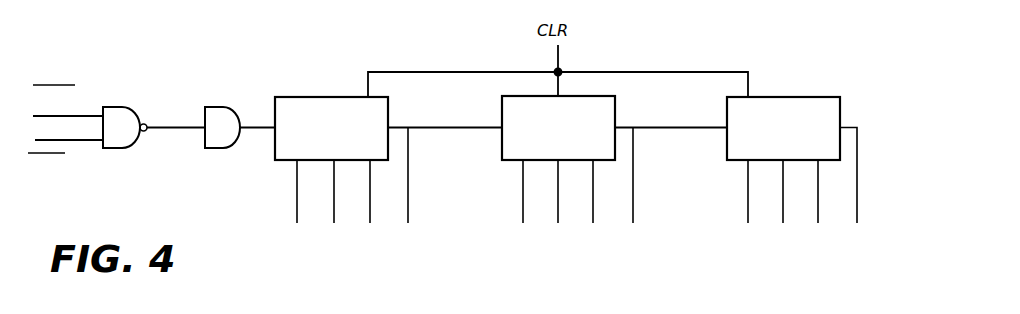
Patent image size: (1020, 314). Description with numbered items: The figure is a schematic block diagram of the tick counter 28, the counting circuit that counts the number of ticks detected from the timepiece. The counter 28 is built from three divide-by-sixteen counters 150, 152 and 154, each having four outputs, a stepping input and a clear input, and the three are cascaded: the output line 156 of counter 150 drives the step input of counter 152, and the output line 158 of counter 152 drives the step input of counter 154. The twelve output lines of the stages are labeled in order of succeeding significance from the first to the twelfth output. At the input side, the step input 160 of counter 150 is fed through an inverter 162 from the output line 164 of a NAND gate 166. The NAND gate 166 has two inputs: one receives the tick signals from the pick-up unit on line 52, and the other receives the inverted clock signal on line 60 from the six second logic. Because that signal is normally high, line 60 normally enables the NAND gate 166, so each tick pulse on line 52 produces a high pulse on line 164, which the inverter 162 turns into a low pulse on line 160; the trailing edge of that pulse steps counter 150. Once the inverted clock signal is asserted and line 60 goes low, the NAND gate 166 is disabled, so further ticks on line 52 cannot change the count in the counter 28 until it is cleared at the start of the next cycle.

The line 52 is at (90, 116).
The line 60 is at (95, 142).
The NAND gate 166 is at (135, 110).
The output line 164 is at (180, 128).
The inverter 162 is at (227, 103).
The step input 160 is at (253, 128).
The ÷16 counter 150 is at (320, 97).
The output line 156 is at (408, 123).
The ÷16 counter 152 is at (602, 108).
The output line 158 is at (660, 128).
The ÷16 counter 154 is at (808, 97).
The tick counter 28 is at (691, 256).